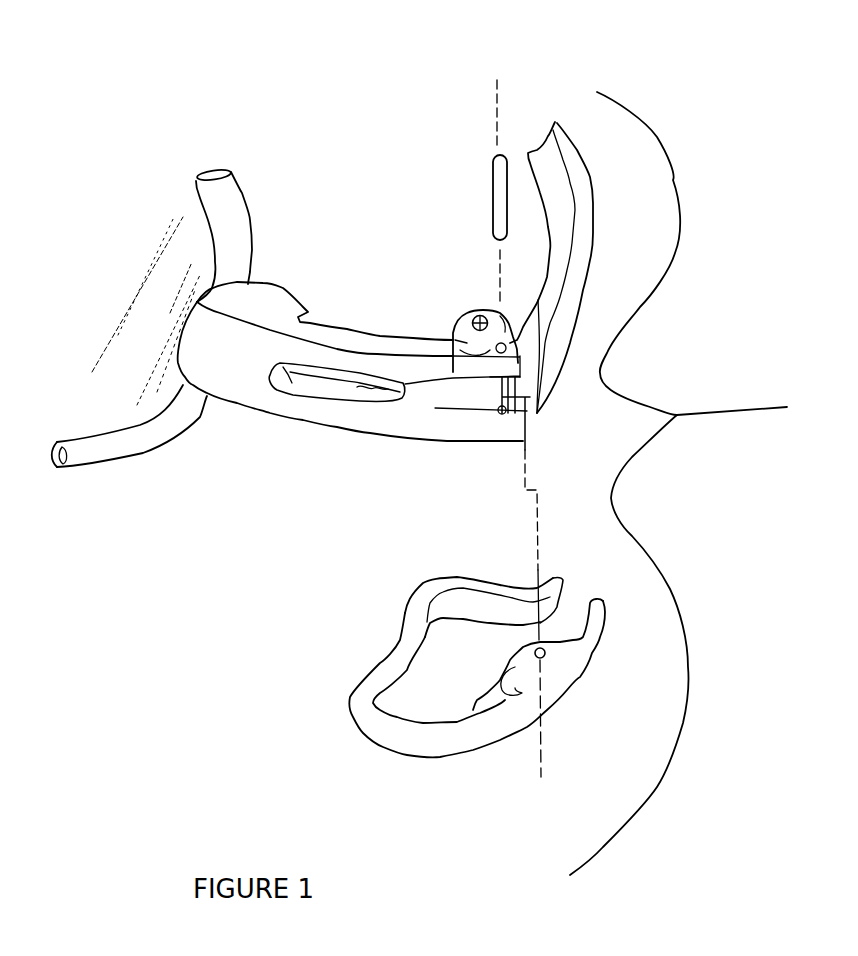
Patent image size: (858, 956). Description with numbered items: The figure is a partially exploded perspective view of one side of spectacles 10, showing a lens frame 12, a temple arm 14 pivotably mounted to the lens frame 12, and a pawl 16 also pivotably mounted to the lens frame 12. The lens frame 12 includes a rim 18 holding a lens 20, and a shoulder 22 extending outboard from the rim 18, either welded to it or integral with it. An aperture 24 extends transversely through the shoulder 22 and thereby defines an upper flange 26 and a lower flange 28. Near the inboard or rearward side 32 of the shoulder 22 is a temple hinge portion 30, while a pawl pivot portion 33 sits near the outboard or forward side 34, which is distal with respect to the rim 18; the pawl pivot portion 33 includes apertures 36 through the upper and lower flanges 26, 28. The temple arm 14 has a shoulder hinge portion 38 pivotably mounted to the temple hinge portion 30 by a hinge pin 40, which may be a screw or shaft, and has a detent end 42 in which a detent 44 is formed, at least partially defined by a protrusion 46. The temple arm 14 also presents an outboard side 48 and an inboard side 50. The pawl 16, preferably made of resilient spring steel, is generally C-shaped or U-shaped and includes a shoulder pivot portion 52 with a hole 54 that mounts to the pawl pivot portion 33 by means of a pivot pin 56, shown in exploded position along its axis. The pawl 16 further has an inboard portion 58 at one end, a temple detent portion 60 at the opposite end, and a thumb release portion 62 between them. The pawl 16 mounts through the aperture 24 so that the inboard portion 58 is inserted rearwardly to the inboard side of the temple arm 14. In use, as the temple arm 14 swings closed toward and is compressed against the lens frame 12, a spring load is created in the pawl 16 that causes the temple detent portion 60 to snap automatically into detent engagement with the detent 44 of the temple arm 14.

The spectacles 10 is at (700, 483).
The lens frame 12 is at (217, 428).
The temple arm 14 is at (578, 175).
The pawl 16 is at (355, 703).
The rim 18 is at (140, 443).
The lens 20 is at (127, 373).
The shoulder 22 is at (274, 305).
The aperture 24 is at (373, 393).
The upper flange 26 is at (353, 348).
The lower flange 28 is at (337, 423).
The temple hinge portion 30 is at (460, 303).
The inboard side of the shoulder 32 is at (465, 300).
The pawl pivot portion 33 is at (493, 350).
The outboard side of the shoulder 34 is at (522, 374).
The apertures 36 is at (512, 343).
The shoulder hinge portion 38 is at (452, 333).
The hinge pin 40 is at (476, 308).
The detent end 42 is at (533, 430).
The detent 44 is at (553, 393).
The protrusion 46 is at (540, 343).
The outboard side of the temple arm 48 is at (587, 297).
The inboard side of the temple arm 50 is at (547, 290).
The shoulder pivot portion 52 is at (473, 710).
The hole 54 is at (545, 656).
The pivot pin 56 is at (491, 154).
The inboard portion 58 is at (560, 578).
The temple detent portion 60 is at (598, 604).
The thumb release portion 62 is at (383, 745).